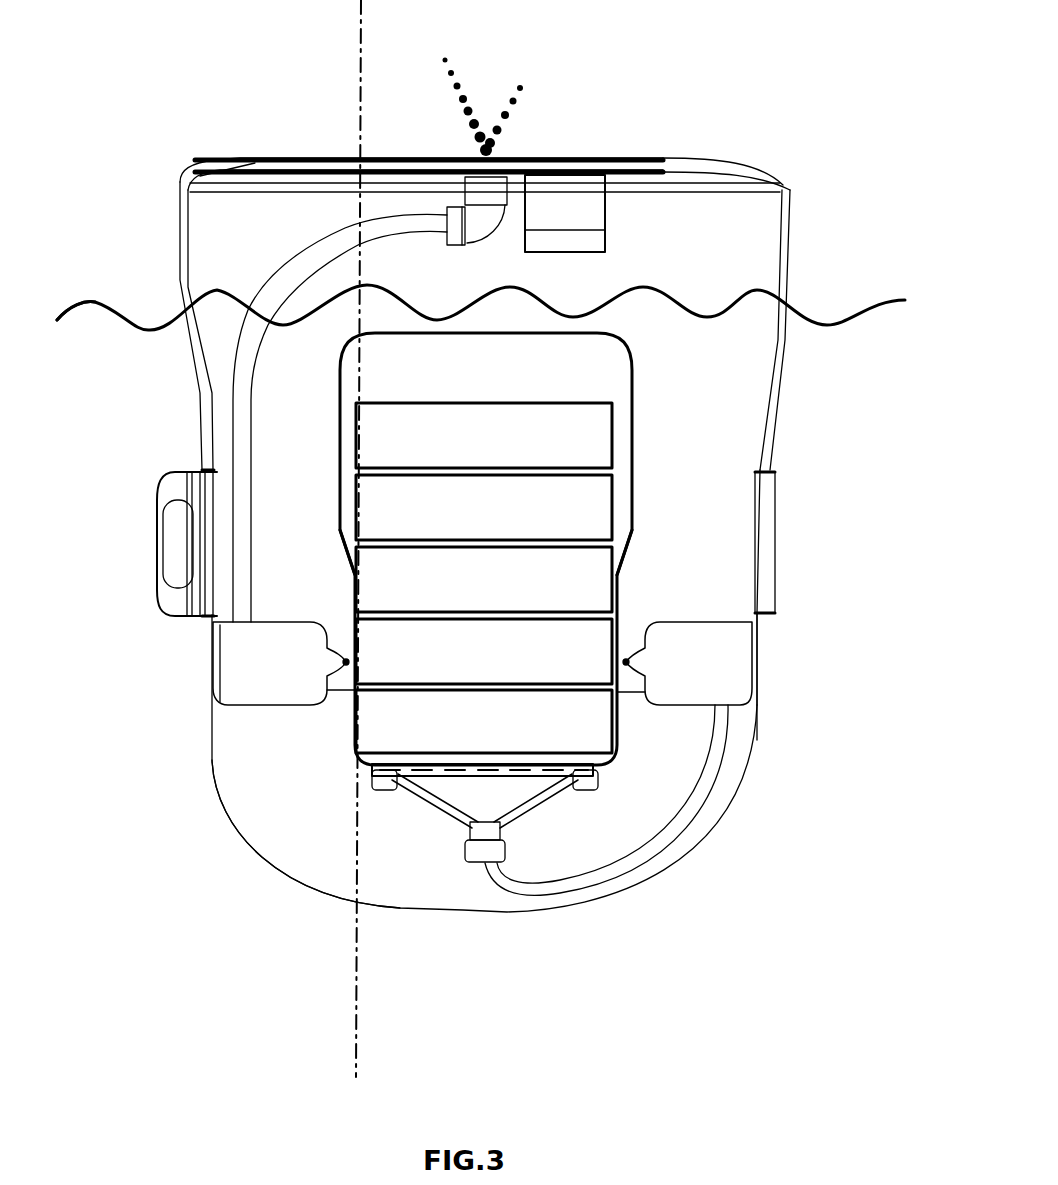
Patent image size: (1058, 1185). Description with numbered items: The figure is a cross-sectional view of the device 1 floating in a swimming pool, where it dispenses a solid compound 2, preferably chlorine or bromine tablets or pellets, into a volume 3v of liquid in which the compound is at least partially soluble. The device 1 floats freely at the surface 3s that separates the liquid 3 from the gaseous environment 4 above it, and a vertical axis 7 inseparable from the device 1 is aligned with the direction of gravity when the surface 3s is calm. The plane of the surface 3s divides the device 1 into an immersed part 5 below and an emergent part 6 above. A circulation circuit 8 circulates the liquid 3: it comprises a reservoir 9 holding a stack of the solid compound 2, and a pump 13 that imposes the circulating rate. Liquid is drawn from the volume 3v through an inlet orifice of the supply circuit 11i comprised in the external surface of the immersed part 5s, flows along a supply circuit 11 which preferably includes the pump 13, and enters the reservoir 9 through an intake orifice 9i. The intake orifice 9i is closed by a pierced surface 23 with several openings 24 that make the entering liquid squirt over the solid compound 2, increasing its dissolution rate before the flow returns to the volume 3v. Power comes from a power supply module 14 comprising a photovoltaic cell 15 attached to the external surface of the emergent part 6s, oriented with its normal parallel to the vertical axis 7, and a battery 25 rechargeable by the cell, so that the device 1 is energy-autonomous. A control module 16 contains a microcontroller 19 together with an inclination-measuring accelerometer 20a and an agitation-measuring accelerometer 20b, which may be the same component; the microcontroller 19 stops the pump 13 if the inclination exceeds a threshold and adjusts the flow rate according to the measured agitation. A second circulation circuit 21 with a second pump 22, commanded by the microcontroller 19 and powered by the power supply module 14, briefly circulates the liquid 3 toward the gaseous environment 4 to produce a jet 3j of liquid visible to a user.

The device 1 is at (182, 128).
The solid compound 2 is at (484, 578).
The liquid 3 is at (79, 335).
The surface 3s is at (895, 298).
The volume of liquid 3v is at (227, 834).
The jet of liquid 3j is at (527, 85).
The gaseous environment 4 is at (148, 429).
The immersed part 5 is at (762, 750).
The external surface of the immersed part 5s is at (738, 515).
The emergent part 6 is at (792, 210).
The external surface of the emergent part 6s is at (485, 211).
The vertical axis 7 is at (363, 1007).
The circulation circuit 8 is at (645, 577).
The reservoir 9 is at (632, 392).
The intake orifice 9i is at (600, 778).
The supply circuit 11 is at (700, 787).
The inlet orifice of the supply circuit 11i is at (758, 662).
The pump 13 is at (684, 663).
The power supply module 14 is at (573, 108).
The photovoltaic cell 15 is at (620, 156).
The control module 16 is at (617, 212).
The microcontroller 19 is at (678, 171).
The inclination-measuring accelerometer 20a is at (707, 171).
The agitation-measuring accelerometer 20b is at (732, 171).
The second circulation circuit 21 is at (271, 522).
The second pump 22 is at (284, 663).
The pierced surface 23 is at (500, 762).
The opening 24 is at (433, 762).
The battery 25 is at (537, 253).